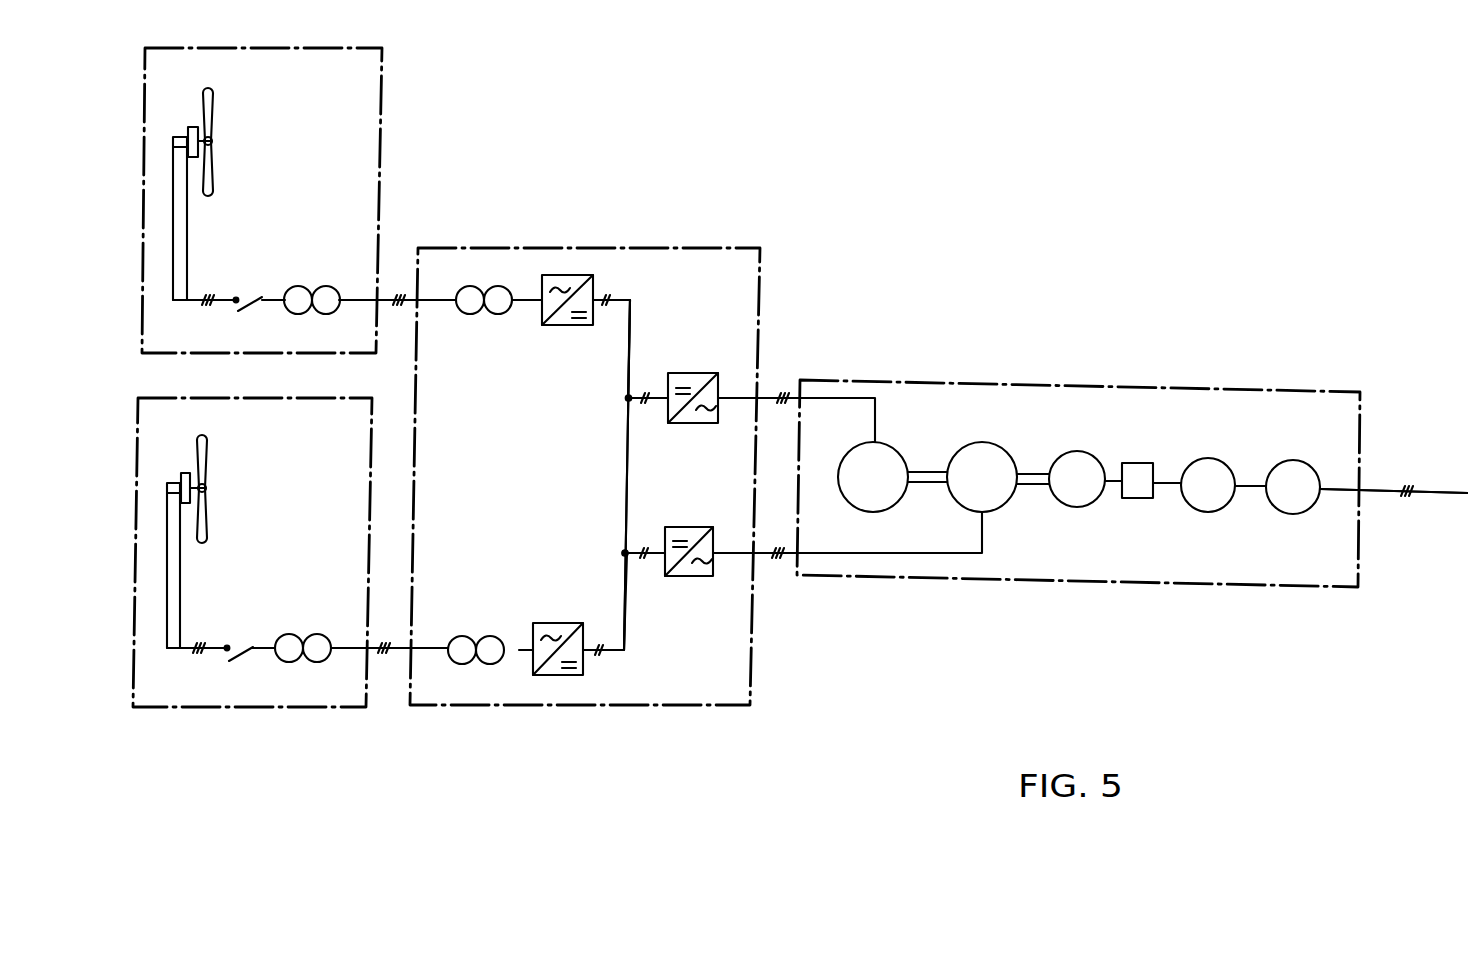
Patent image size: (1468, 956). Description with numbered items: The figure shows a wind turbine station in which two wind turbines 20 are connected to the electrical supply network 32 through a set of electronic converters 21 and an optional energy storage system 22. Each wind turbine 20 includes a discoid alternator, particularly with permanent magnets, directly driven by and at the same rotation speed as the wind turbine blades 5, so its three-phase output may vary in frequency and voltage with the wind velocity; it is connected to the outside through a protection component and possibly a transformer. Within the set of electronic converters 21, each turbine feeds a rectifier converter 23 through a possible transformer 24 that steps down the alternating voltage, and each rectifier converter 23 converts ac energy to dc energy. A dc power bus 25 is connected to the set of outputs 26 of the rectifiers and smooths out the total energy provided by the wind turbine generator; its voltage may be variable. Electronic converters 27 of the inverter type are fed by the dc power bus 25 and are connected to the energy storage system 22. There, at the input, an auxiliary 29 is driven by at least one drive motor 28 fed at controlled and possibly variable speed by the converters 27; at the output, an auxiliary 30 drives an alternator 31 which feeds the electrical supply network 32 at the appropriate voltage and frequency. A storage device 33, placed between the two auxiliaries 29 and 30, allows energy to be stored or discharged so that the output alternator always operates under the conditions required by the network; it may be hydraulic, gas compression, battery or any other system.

The wind turbine blades 5 is at (215, 93).
The wind turbine 20 is at (181, 245).
The set of electronic converters 21 is at (692, 248).
The energy storage system 22 is at (1290, 392).
The rectifier converter 23 is at (560, 325).
The transformer 24 is at (311, 287).
The dc power bus 25 is at (628, 455).
The outputs of the rectifiers 26 is at (630, 342).
The electronic converters of the inverter type 27 is at (686, 423).
The drive motor 28 is at (974, 443).
The input auxiliary 29 is at (1076, 451).
The output auxiliary 30 is at (1210, 458).
The alternator 31 is at (1292, 460).
The electrical supply network 32 is at (1440, 491).
The storage device 33 is at (1134, 463).